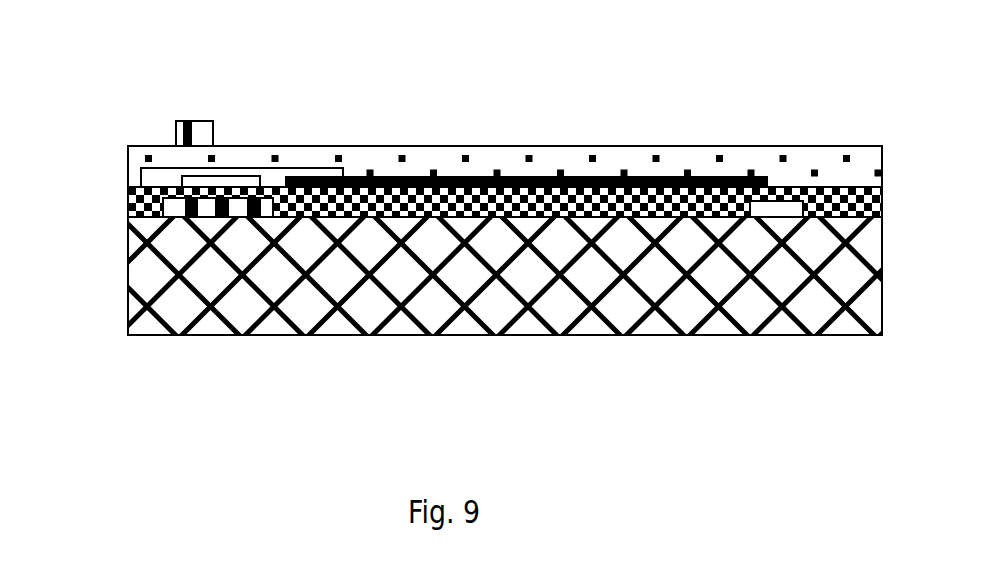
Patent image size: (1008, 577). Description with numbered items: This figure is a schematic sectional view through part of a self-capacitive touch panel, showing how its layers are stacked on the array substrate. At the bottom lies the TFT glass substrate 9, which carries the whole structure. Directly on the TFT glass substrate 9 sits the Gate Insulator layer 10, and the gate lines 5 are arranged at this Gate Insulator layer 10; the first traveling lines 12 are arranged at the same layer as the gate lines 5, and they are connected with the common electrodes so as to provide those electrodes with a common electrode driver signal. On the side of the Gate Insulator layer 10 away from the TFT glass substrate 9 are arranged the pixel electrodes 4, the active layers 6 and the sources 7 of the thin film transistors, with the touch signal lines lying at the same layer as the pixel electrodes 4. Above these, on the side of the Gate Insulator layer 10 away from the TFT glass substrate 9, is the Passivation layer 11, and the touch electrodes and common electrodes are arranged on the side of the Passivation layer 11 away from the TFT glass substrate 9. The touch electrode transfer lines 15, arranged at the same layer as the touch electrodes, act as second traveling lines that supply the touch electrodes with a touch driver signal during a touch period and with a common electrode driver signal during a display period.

The pixel electrode 4 is at (499, 187).
The gate line 5 is at (194, 217).
The active layer 6 is at (231, 187).
The source 7 is at (273, 187).
The TFT glass substrate 9 is at (153, 276).
The Gate Insulator layer 10 is at (130, 198).
The Passivation layer 11 is at (148, 158).
The first traveling line 12 is at (773, 217).
The touch electrode transfer line 15 is at (188, 121).